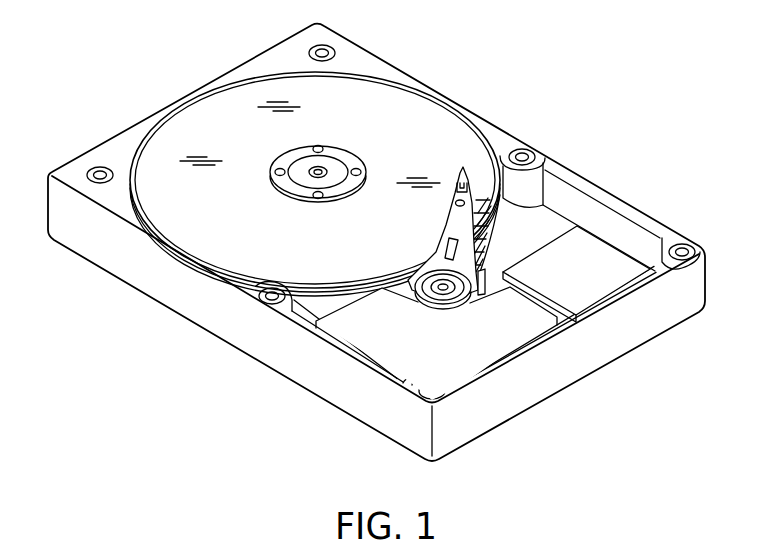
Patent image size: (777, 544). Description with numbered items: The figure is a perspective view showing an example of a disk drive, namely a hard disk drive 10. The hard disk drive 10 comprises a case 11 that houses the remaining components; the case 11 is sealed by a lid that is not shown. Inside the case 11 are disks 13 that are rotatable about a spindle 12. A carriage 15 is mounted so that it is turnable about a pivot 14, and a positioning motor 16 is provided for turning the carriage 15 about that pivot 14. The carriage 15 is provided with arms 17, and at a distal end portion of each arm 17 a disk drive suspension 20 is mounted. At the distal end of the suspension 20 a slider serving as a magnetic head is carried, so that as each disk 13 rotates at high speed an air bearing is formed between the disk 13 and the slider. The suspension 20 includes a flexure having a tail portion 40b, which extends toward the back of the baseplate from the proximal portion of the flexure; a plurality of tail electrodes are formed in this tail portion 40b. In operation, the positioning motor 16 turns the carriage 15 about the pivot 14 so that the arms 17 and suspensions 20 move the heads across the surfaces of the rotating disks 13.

The hard disk drive 10 is at (376, 242).
The case 11 is at (210, 322).
The spindle 12 is at (333, 163).
The disk 13 is at (413, 114).
The pivot 14 is at (450, 298).
The carriage 15 is at (480, 238).
The positioning motor 16 is at (383, 353).
The arm 17 is at (460, 218).
The disk drive suspension 20 is at (469, 172).
The tail portion 40b is at (462, 266).